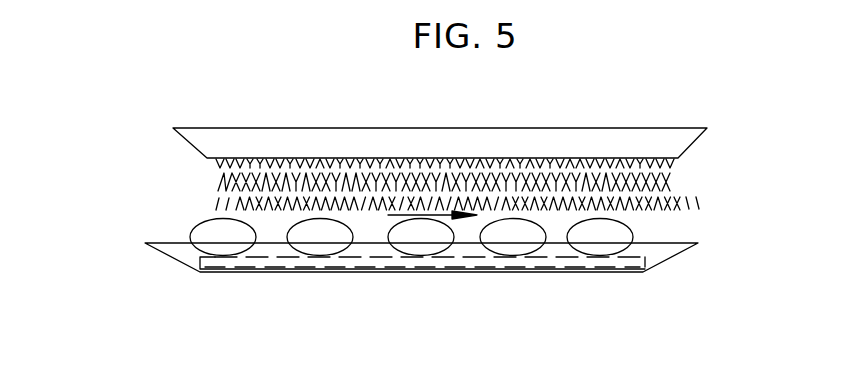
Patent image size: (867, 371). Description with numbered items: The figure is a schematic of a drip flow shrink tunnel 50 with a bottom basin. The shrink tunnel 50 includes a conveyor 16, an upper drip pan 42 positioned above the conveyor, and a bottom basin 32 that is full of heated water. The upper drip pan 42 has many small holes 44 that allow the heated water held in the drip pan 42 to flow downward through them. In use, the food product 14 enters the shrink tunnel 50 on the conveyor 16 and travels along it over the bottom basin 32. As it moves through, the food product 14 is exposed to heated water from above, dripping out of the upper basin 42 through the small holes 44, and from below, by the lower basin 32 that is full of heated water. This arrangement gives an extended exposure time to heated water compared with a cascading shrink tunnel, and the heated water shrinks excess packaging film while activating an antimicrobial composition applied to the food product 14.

The drip flow shrink tunnel 50 is at (118, 173).
The upper drip pan 42 is at (254, 143).
The small holes 44 is at (218, 168).
The food product 14 is at (200, 233).
The bottom basin 32 is at (178, 255).
The conveyor 16 is at (278, 262).